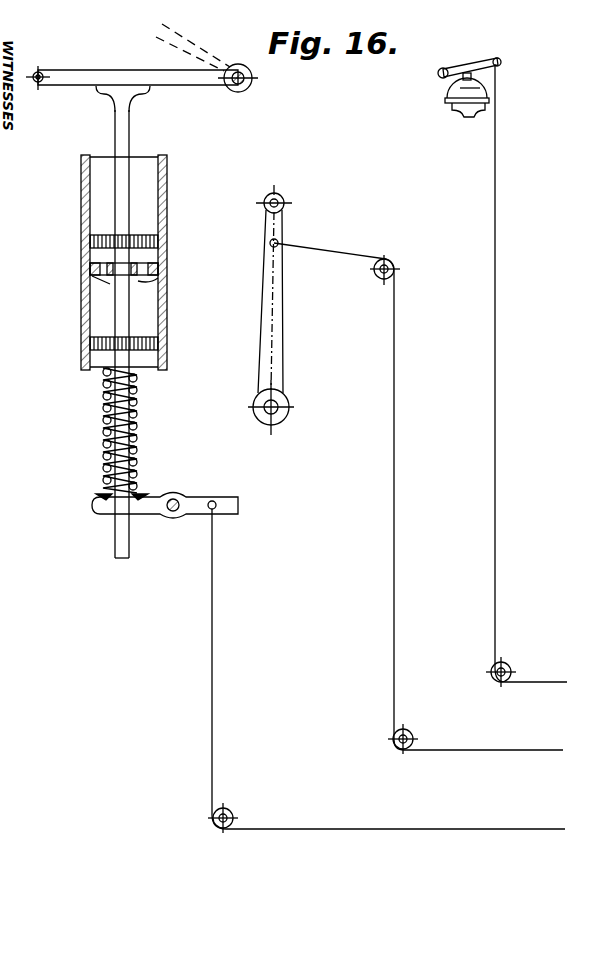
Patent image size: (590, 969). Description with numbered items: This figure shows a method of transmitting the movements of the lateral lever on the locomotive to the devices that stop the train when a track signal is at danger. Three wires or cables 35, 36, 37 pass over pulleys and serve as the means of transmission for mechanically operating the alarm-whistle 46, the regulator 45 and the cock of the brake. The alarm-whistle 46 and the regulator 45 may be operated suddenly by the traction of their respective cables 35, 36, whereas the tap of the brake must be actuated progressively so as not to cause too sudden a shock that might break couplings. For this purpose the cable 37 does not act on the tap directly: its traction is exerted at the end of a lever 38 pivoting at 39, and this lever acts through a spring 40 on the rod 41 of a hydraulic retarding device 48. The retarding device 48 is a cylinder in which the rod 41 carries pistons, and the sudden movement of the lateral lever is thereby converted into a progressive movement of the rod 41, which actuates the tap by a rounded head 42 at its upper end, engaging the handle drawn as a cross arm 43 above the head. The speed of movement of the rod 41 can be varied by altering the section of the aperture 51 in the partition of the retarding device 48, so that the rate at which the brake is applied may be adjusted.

The wire or cable 35 is at (494, 490).
The wire or cable 36 is at (392, 486).
The wire or cable 37 is at (212, 618).
The lever 38 is at (230, 492).
The pivot 39 is at (172, 512).
The spring 40 is at (135, 449).
The rod 41 is at (127, 131).
The rounded head 42 is at (113, 99).
The arm 43 is at (125, 58).
The regulator 45 is at (268, 314).
The alarm-whistle 46 is at (448, 88).
The hydraulic retarding device 48 is at (82, 282).
The aperture 51 is at (160, 279).